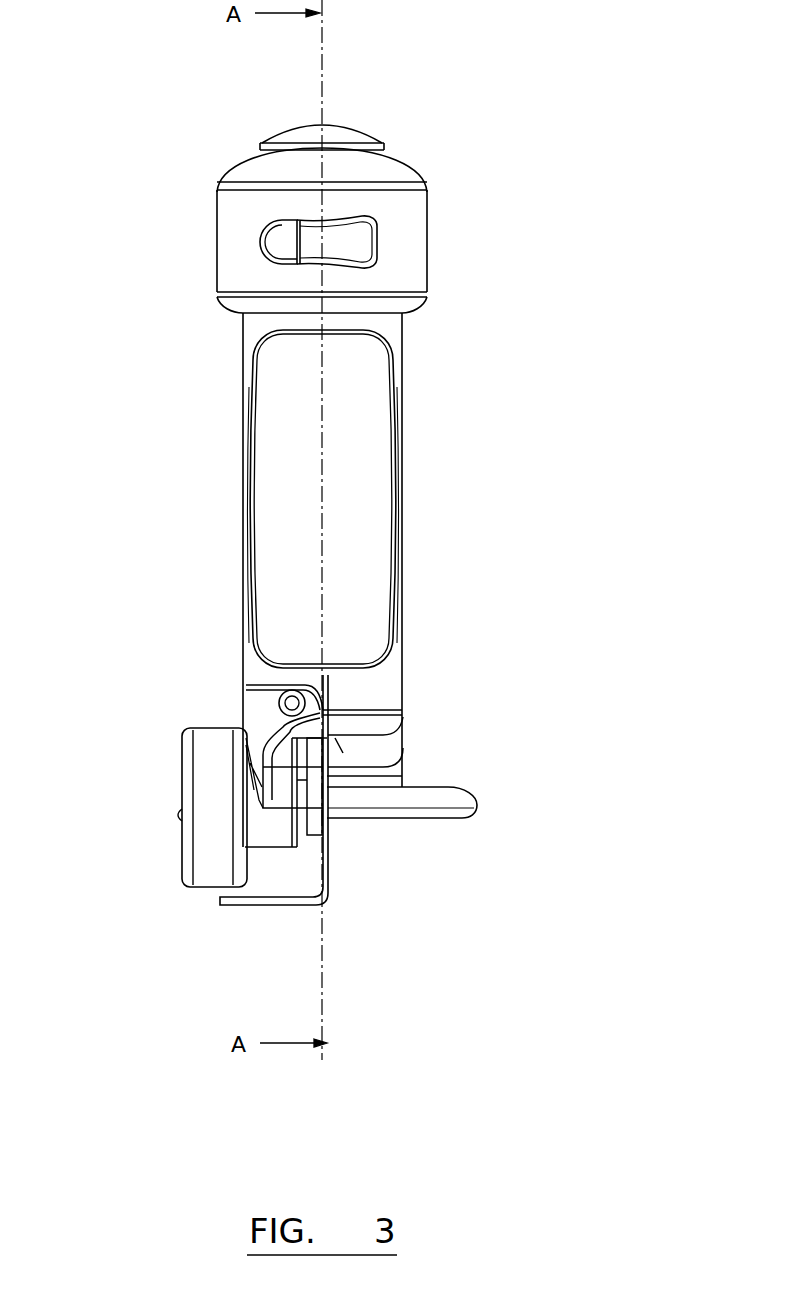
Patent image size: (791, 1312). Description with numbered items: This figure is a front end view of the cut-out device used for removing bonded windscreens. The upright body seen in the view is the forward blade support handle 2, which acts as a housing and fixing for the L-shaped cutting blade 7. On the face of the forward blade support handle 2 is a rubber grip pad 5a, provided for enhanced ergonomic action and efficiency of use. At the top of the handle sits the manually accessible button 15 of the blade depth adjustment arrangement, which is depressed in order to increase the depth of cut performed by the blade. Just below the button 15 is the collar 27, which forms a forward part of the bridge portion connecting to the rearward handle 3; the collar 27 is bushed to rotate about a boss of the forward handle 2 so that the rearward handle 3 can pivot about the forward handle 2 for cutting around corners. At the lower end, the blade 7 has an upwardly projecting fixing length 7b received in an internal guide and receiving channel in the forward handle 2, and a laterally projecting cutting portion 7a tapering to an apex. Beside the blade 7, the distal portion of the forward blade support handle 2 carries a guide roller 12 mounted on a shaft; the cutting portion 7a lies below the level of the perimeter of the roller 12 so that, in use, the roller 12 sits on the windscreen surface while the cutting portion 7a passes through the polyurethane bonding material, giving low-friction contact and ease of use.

The manually accessible button 15 is at (340, 125).
The collar 27 is at (405, 243).
The rubber grip pad 5a is at (355, 462).
The forward blade support handle 2 is at (380, 688).
The rearward handle 3 is at (405, 762).
The guide roller 12 is at (210, 767).
The cutting blade 7 is at (350, 845).
The cutting portion 7a is at (335, 898).
The fixing length 7b is at (328, 852).